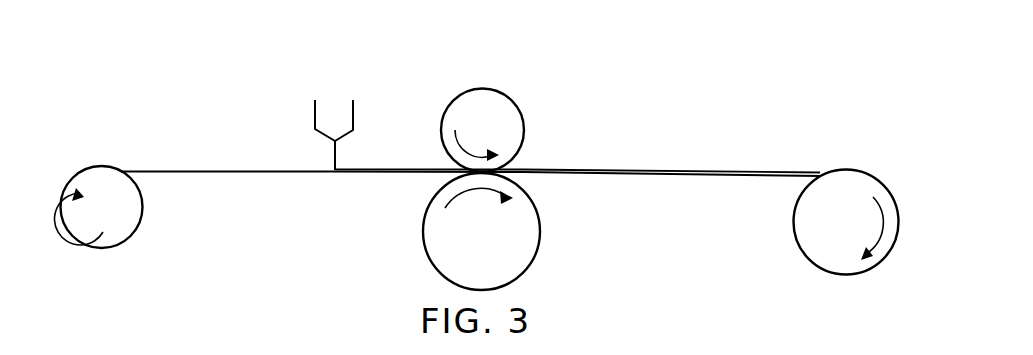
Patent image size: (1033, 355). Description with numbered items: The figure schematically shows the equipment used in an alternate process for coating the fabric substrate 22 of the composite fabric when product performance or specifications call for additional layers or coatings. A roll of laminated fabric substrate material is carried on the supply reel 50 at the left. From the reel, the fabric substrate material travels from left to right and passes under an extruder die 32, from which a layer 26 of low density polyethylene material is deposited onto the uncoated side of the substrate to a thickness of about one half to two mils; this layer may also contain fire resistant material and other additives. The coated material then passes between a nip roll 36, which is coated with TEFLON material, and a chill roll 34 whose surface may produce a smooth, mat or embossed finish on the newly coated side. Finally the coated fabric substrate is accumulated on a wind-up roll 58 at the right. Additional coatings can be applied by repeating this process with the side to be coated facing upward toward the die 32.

The fabric substrate 22 is at (208, 171).
The layer of low density polyethylene material 26 is at (375, 168).
The extruder die 32 is at (323, 116).
The chill roll 34 is at (508, 115).
The nip roll 36 is at (525, 235).
The reel 50 is at (127, 212).
The wind-up roll 58 is at (815, 213).